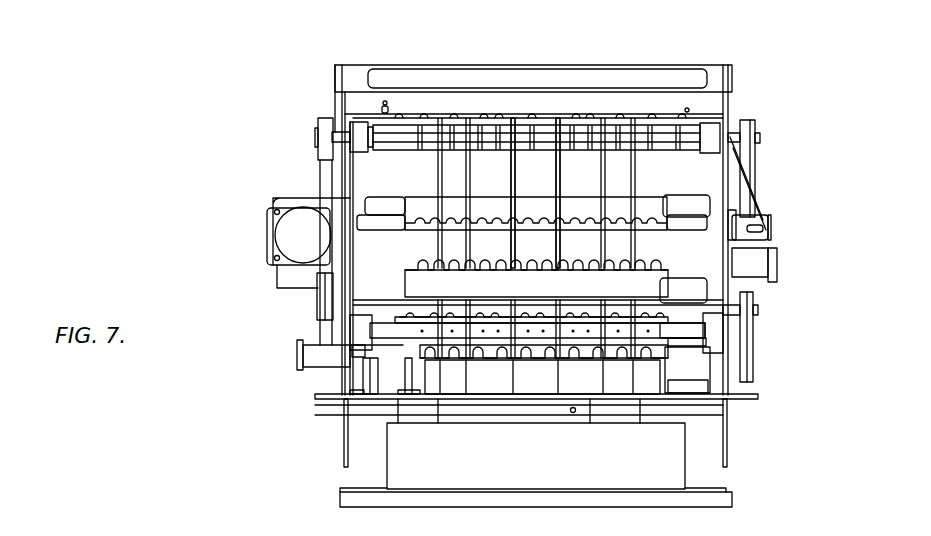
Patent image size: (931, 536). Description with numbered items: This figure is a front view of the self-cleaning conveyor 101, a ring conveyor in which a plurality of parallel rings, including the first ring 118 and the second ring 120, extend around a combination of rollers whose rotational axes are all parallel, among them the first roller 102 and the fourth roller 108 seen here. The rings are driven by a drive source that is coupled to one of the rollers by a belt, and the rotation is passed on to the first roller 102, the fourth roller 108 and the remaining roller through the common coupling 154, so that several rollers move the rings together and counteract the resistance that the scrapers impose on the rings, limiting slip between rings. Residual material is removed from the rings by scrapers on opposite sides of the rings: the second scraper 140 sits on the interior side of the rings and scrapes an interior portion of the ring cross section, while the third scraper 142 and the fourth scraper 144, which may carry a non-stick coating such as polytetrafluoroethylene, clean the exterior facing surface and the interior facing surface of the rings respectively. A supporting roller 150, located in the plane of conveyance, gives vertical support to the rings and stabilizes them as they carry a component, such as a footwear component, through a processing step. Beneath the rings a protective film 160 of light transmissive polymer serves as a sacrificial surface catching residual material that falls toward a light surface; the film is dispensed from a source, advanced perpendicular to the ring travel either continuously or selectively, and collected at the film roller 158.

The self-cleaning conveyor 101 is at (222, 104).
The first roller 102 is at (408, 123).
The fourth roller 108 is at (688, 336).
The first ring 118 is at (503, 164).
The second ring 120 is at (548, 168).
The second scraper 140 is at (424, 346).
The third scraper 142 is at (426, 272).
The fourth scraper 144 is at (419, 198).
The supporting roller 150 is at (381, 116).
The common coupling 154 is at (320, 171).
The film roller 158 is at (778, 228).
The protective film 160 is at (744, 172).